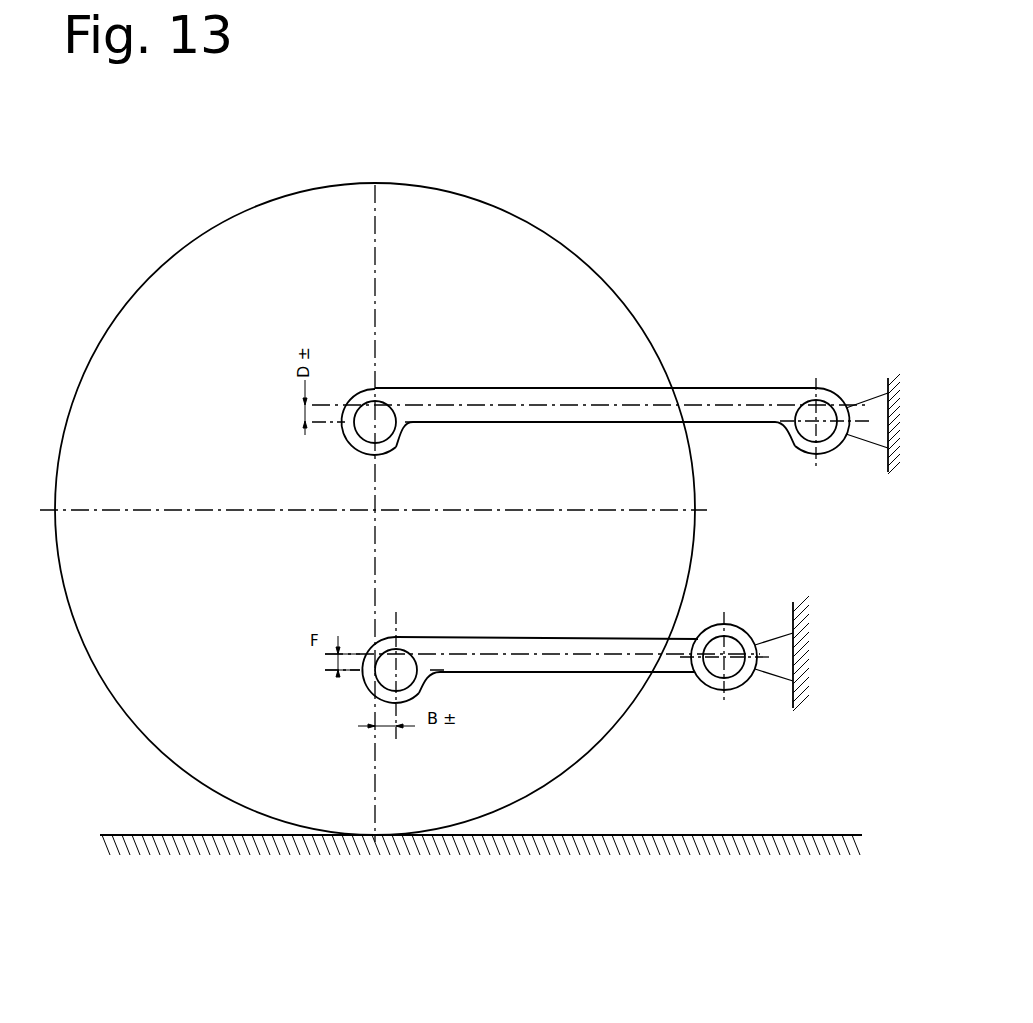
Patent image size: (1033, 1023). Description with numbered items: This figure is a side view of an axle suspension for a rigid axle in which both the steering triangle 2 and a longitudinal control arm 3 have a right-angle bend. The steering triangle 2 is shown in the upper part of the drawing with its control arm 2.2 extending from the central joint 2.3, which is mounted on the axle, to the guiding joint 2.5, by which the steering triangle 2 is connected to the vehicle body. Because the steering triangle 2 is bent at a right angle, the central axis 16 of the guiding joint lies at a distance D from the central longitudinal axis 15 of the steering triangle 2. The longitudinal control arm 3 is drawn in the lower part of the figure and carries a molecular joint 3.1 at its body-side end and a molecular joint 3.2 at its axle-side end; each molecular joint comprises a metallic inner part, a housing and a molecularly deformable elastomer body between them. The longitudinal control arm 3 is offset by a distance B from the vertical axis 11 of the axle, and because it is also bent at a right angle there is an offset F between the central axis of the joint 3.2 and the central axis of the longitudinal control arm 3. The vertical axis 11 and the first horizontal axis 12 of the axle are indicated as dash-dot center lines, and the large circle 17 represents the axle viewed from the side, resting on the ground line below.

The steering triangle 2 is at (500, 378).
The control arm 2.2 is at (724, 398).
The central joint 2.3 is at (383, 378).
The guiding joint 2.5 is at (825, 385).
The longitudinal control arm 3 is at (569, 653).
The molecular joint 3.1 is at (740, 690).
The molecular joint 3.2 is at (365, 692).
The vertical axis 11 is at (372, 204).
The first horizontal axis 12 is at (627, 510).
The central longitudinal axis 15 is at (580, 405).
The central axis 16 is at (413, 423).
The wheel 17 is at (237, 375).